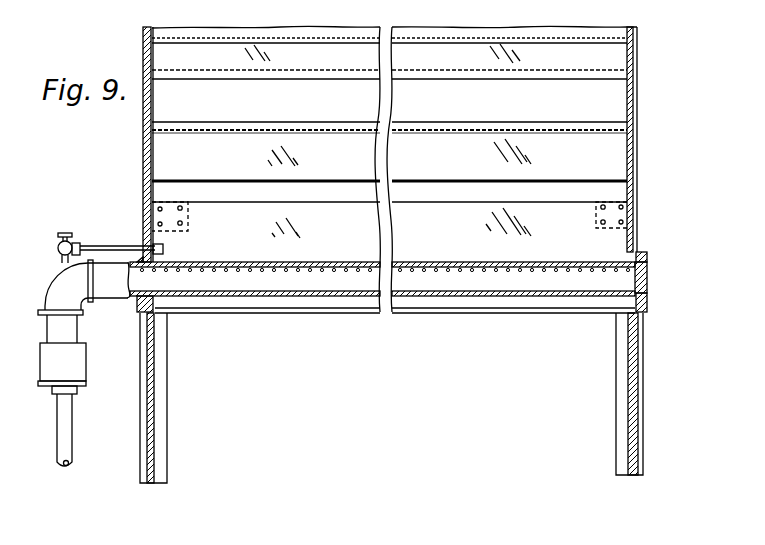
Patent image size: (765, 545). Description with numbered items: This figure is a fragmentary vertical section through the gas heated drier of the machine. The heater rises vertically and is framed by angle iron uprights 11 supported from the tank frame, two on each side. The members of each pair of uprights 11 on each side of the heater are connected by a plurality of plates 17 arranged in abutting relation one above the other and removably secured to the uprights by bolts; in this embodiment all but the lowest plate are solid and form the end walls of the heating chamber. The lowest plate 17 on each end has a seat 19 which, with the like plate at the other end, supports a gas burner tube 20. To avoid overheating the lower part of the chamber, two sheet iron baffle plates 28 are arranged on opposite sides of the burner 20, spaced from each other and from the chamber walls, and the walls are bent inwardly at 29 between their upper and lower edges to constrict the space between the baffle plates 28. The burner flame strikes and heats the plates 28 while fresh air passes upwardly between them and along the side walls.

The angle iron uprights 11 is at (160, 452).
The plates 17 is at (146, 43).
The seat 19 is at (140, 302).
The gas burner tube 20 is at (512, 283).
The baffle plates 28 is at (618, 142).
The inwardly deflected portion 29 is at (172, 192).